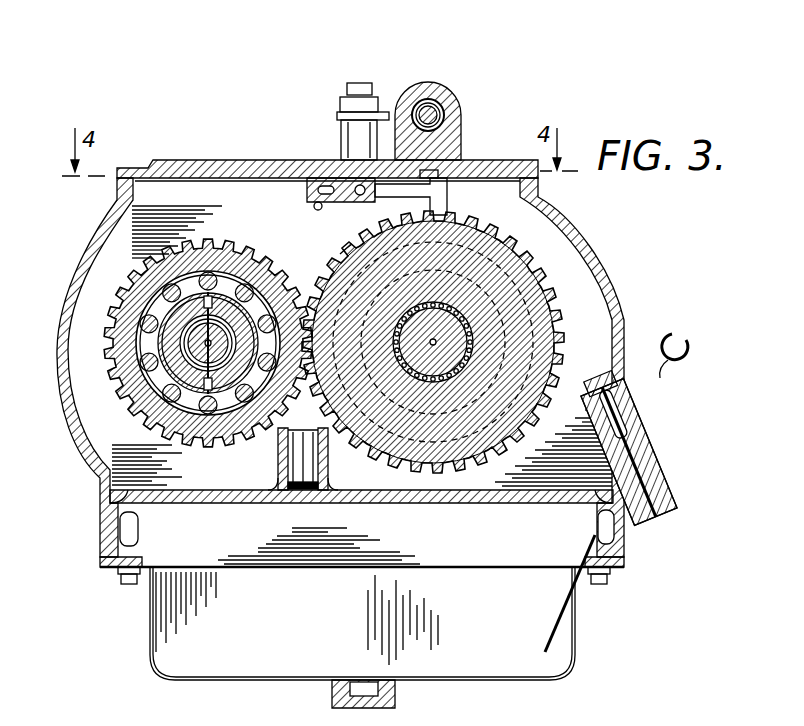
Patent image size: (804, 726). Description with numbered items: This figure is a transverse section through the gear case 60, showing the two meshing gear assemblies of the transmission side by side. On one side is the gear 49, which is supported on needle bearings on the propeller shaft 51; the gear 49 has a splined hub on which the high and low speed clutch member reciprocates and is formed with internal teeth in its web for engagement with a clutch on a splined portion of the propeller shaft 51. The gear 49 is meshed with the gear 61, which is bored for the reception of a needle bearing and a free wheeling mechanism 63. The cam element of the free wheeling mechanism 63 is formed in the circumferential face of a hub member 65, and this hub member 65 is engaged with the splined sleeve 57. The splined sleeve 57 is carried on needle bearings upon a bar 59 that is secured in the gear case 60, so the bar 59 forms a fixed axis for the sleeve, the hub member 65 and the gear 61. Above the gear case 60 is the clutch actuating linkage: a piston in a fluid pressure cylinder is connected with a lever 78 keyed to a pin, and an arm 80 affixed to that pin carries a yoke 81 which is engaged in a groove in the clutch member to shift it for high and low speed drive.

The gear 49 is at (558, 362).
The propeller shaft 51 is at (520, 300).
The splined sleeve 57 is at (178, 326).
The bar 59 is at (215, 270).
The gear case 60 is at (70, 404).
The gear 61 is at (218, 432).
The free wheeling mechanism 63 is at (200, 332).
The hub member 65 is at (150, 364).
The lever 78 is at (392, 120).
The arm 80 is at (410, 198).
The yoke 81 is at (340, 252).